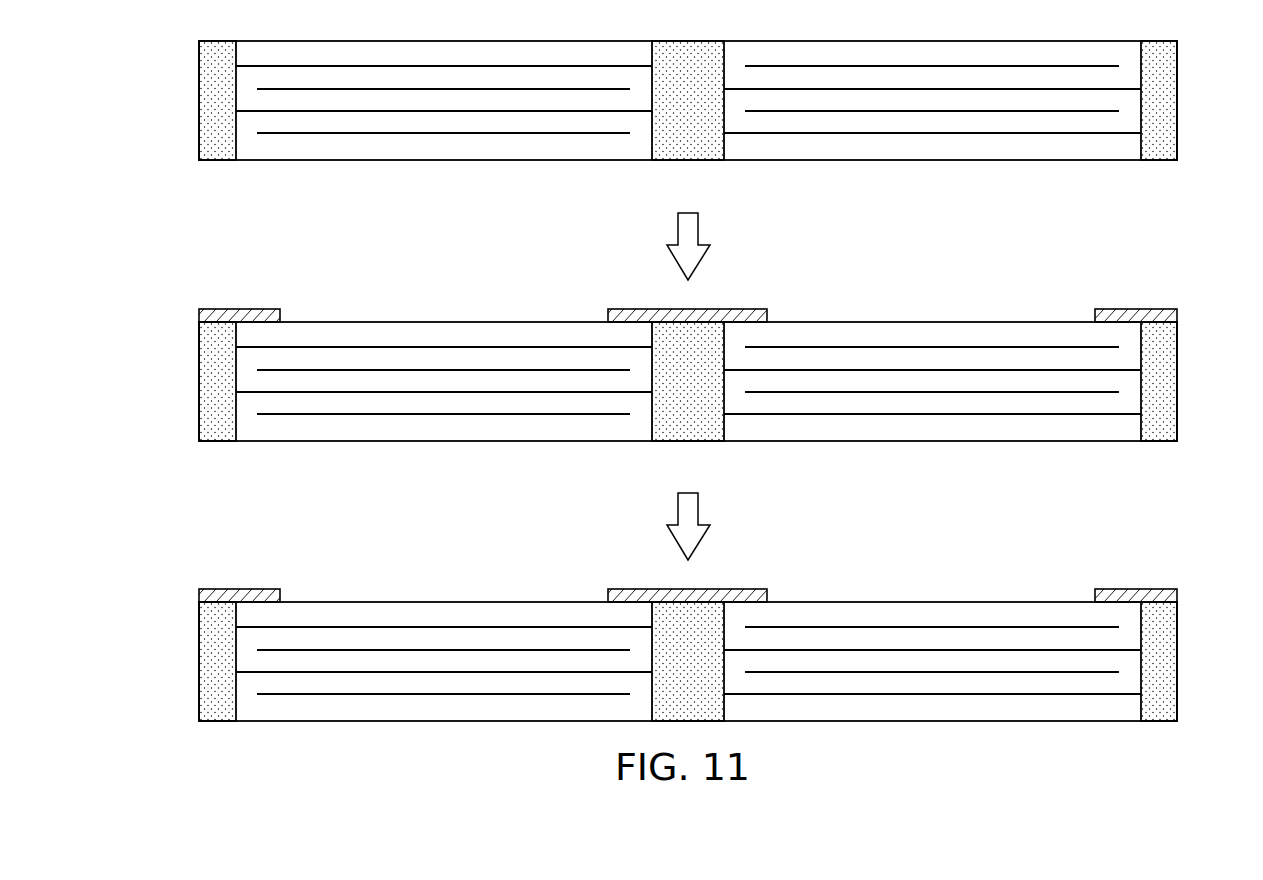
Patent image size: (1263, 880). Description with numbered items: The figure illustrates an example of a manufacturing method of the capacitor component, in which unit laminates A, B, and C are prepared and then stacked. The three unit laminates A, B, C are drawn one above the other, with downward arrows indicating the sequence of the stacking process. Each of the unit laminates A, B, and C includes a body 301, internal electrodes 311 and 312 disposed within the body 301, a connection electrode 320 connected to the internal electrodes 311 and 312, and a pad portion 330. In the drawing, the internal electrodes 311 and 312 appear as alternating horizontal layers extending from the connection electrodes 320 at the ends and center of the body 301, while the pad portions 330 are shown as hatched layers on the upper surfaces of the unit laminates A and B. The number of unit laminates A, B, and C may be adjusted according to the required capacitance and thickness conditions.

The body 301 is at (1025, 618).
The internal electrode 311 is at (831, 628).
The internal electrode 312 is at (926, 650).
The connection electrode 320 is at (1168, 656).
The pad portion 330 is at (1170, 595).
The unit laminate A is at (176, 633).
The unit laminate B is at (176, 353).
The unit laminate C is at (176, 71).